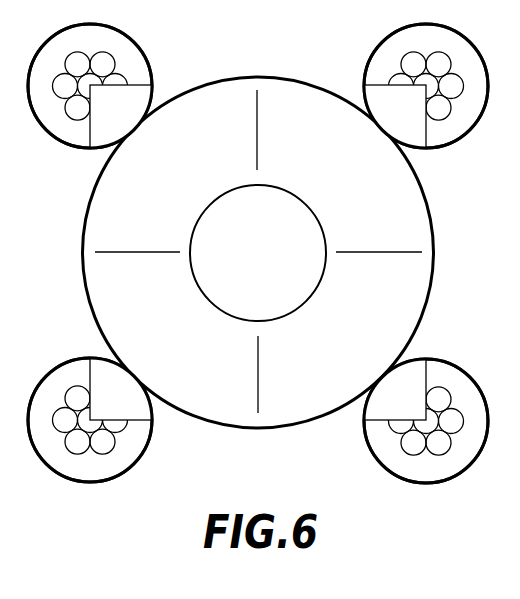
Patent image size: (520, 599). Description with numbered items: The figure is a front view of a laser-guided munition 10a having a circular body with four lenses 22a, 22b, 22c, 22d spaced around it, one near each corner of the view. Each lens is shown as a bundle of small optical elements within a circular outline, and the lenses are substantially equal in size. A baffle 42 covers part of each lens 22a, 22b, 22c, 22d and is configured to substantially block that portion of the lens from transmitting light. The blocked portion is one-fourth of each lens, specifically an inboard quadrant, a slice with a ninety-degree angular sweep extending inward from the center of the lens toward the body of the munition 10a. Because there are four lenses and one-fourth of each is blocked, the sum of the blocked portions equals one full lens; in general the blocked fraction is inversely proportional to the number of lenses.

The munition 10a is at (273, 285).
The lens 22a is at (450, 145).
The lens 22b is at (145, 53).
The lens 22c is at (142, 458).
The lens 22d is at (447, 358).
The baffle 42 is at (128, 119).